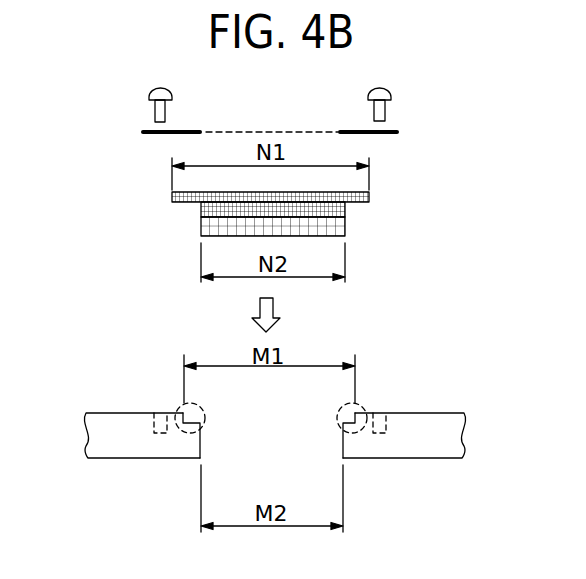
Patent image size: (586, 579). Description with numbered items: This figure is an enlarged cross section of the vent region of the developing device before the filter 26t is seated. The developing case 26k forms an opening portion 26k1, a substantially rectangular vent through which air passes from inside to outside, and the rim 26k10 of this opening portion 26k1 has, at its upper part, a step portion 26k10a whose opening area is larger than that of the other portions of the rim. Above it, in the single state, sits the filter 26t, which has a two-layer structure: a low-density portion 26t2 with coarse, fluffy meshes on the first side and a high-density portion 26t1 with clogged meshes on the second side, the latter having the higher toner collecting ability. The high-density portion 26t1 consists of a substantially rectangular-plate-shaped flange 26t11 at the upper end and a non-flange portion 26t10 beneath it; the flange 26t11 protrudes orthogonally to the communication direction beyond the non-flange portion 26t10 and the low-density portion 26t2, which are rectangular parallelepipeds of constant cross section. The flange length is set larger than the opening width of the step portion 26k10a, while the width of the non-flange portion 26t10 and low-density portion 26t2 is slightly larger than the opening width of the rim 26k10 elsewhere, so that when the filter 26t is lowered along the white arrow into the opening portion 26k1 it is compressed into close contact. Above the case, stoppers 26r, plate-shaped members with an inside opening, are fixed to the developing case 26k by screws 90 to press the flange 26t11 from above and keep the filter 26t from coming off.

The stopper 26r is at (178, 131).
The screw 90 is at (391, 91).
The filter 26t is at (304, 210).
The high-density portion 26t1 is at (347, 214).
The flange 26t11 is at (370, 197).
The non-flange portion 26t10 is at (346, 210).
The low-density portion 26t2 is at (205, 228).
The developing case 26k is at (256, 421).
The opening portion 26k1 is at (265, 432).
The rim 26k10 is at (343, 441).
The step portion 26k10a is at (360, 405).